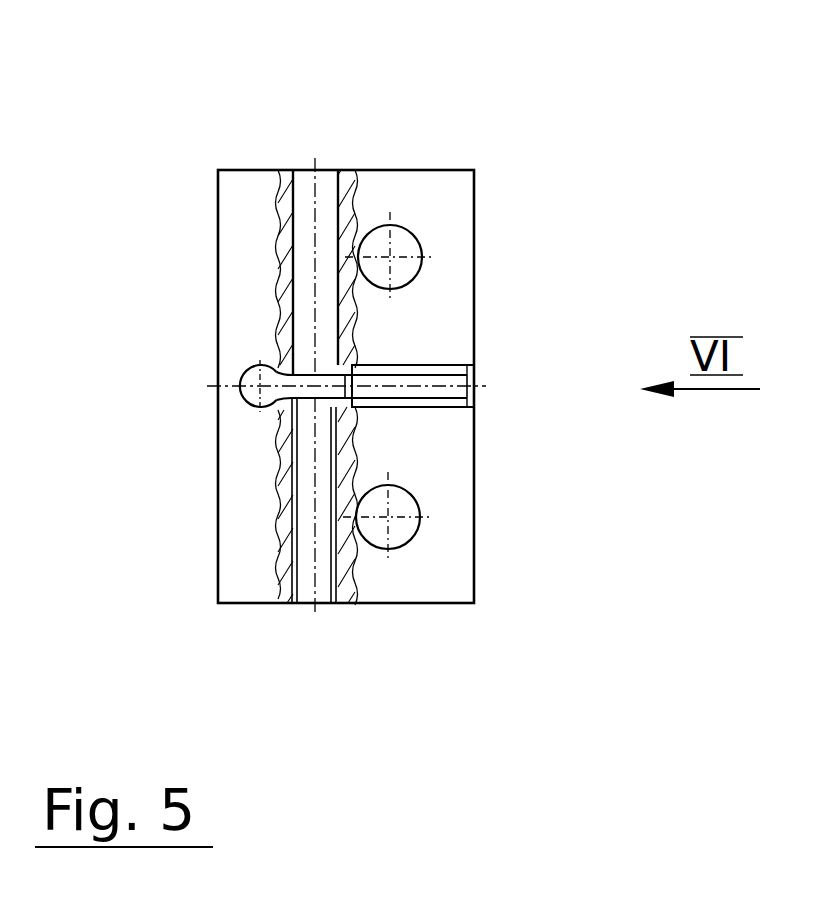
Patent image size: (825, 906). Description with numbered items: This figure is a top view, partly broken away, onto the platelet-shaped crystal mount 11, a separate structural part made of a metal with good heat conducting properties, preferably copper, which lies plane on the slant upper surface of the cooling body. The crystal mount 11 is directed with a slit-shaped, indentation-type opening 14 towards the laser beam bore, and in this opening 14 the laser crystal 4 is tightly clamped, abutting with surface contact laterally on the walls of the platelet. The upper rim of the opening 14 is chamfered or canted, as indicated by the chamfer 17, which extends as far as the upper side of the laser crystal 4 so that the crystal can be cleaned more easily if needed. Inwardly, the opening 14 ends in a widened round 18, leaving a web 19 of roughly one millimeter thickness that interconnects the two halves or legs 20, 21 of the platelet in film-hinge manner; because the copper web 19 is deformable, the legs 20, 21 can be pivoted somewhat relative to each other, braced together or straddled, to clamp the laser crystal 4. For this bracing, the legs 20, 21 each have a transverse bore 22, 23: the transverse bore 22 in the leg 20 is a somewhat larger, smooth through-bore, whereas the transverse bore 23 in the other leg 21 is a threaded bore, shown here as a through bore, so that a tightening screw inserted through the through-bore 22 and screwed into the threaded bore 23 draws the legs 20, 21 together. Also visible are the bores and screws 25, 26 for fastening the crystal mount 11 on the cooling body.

The laser crystal 4 is at (402, 382).
The crystal mount 11 is at (216, 575).
The slit-shaped opening 14 is at (501, 423).
The chamfer 17 is at (472, 402).
The widened round 18 is at (253, 380).
The web 19 is at (233, 402).
The leg 20 is at (452, 237).
The leg 21 is at (443, 580).
The transverse bore 22 is at (305, 183).
The transverse bore 23 is at (305, 593).
The bore and screw 25 is at (413, 233).
The bore and screw 26 is at (418, 502).